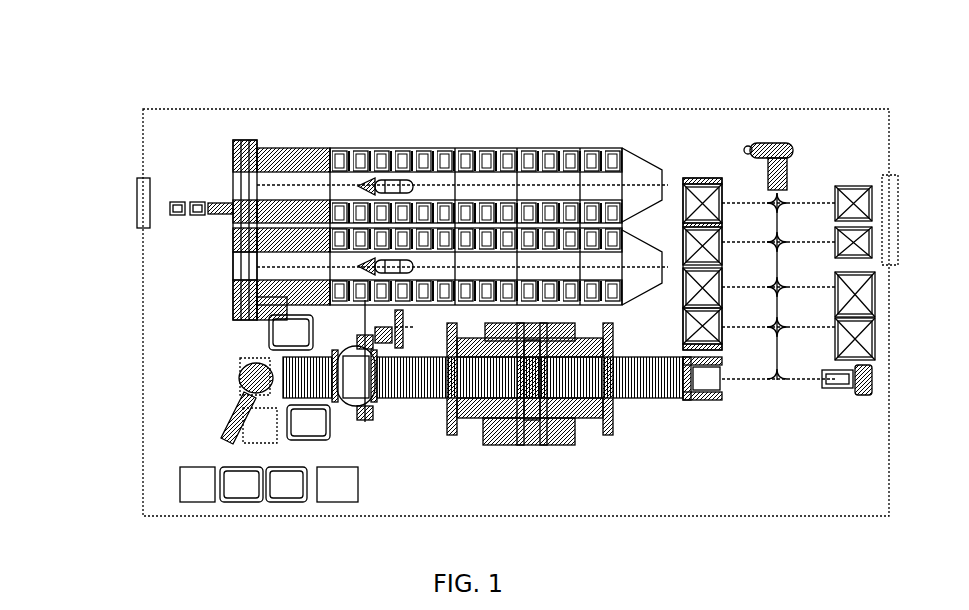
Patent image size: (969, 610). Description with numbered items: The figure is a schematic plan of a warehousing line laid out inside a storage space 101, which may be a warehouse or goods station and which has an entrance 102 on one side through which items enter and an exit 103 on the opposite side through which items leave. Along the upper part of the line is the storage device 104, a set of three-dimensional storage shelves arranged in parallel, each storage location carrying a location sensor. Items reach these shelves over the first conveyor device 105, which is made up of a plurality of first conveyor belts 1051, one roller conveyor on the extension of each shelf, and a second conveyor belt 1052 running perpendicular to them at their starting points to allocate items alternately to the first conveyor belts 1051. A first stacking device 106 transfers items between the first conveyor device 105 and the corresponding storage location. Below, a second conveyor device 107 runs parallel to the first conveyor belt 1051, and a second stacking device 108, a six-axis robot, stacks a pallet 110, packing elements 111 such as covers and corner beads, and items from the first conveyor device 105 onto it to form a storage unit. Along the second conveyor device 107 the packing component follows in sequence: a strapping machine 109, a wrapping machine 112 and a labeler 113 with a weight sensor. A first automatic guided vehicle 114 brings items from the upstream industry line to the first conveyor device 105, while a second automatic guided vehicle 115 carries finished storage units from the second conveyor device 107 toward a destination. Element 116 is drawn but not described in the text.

The storage space 101 is at (503, 270).
The entrance 102 is at (111, 173).
The exit 103 is at (848, 193).
The storage device 104 is at (458, 167).
The first conveyor device 105 is at (141, 258).
The first conveyor belt 1051 is at (161, 241).
The second conveyor belt 1052 is at (176, 317).
The first stacking device 106 is at (371, 148).
The second conveyor device 107 is at (283, 479).
The second stacking device 108 is at (172, 404).
The strapping machine 109 is at (336, 426).
The pallet 110 is at (141, 486).
The packing elements 111 is at (271, 510).
The wrapping machine 112 is at (519, 438).
The labeler 113 is at (661, 455).
The first automatic guided vehicle 114 is at (149, 251).
The second automatic guided vehicle 115 is at (806, 459).
The shelf unit 116 is at (671, 188).